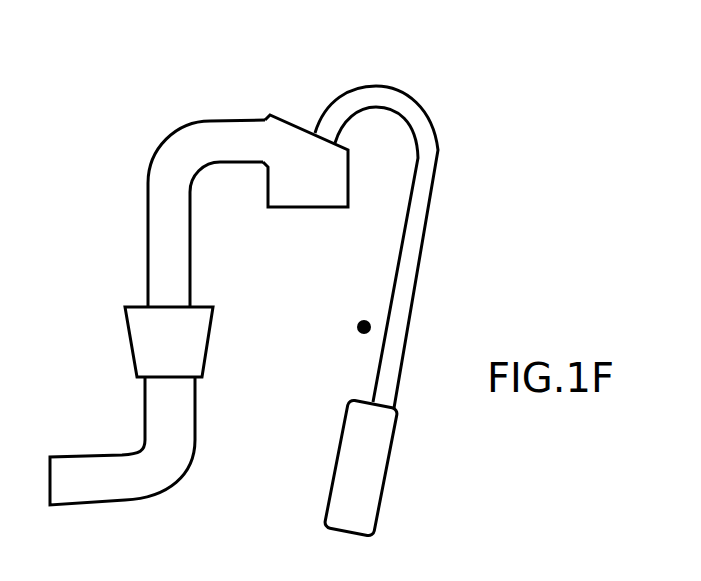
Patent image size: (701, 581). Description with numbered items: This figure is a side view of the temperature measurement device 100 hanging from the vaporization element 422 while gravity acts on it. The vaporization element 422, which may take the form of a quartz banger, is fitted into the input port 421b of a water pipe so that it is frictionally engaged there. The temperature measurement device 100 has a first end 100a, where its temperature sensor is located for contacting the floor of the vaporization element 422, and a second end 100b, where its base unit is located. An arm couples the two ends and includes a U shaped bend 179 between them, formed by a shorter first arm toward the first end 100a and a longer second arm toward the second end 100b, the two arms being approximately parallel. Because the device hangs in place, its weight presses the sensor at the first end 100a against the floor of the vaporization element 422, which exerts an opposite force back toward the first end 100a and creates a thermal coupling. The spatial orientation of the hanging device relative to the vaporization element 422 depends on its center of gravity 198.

The temperature measurement device 100 is at (448, 341).
The first end 100a is at (322, 153).
The second end 100b is at (343, 537).
The U shaped bend 179 is at (380, 110).
The center of gravity 198 is at (357, 329).
The input port 421b is at (213, 295).
The vaporization element 422 is at (183, 127).